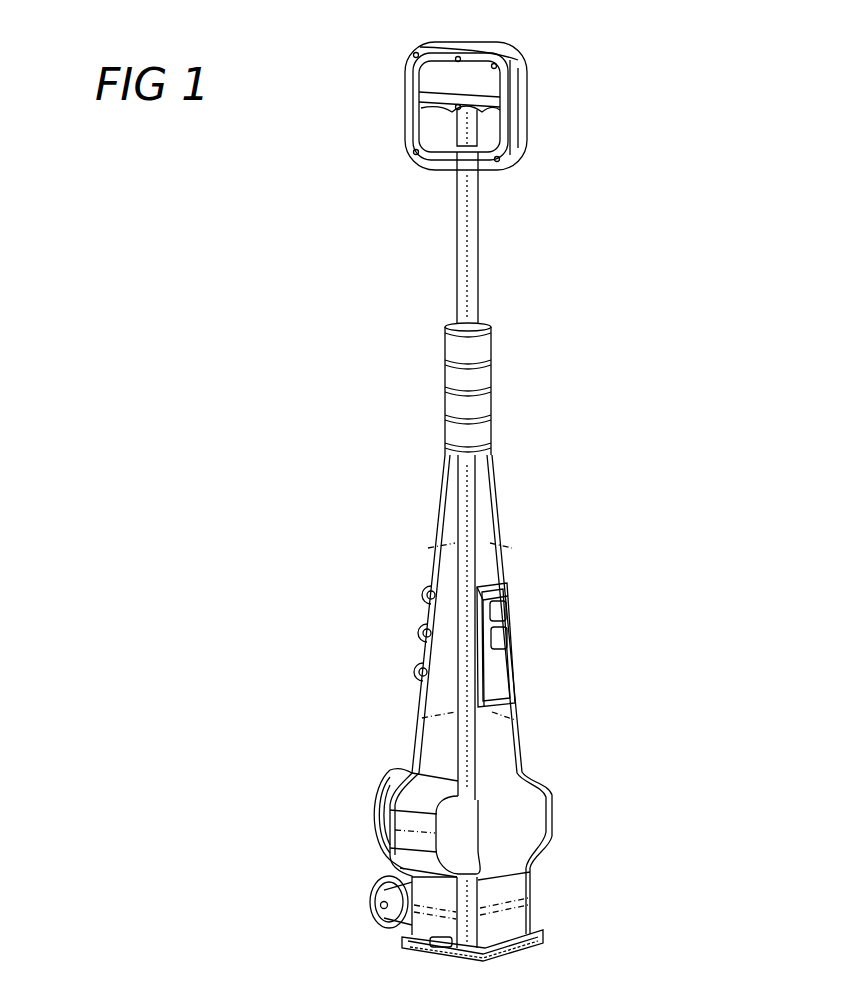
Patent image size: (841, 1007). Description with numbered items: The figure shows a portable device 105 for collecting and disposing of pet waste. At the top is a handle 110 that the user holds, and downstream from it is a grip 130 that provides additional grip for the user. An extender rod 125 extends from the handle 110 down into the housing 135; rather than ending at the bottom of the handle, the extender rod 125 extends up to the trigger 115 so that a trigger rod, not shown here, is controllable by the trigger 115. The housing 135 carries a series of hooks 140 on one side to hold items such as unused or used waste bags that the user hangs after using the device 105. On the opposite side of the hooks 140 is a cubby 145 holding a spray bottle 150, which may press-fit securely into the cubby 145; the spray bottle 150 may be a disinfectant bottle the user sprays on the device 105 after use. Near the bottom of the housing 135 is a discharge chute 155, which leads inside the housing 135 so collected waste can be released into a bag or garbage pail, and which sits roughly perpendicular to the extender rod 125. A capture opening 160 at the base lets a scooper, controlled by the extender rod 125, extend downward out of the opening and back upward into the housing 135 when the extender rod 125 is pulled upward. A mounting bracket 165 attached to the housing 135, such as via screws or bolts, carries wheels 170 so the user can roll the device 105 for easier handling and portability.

The portable device 105 is at (695, 165).
The handle 110 is at (528, 98).
The trigger 115 is at (456, 108).
The extender rod 125 is at (480, 240).
The grip 130 is at (493, 388).
The housing 135 is at (500, 496).
The hooks 140 is at (419, 634).
The cubby 145 is at (515, 639).
The spray bottle 150 is at (516, 669).
The discharge chute 155 is at (352, 793).
The capture opening 160 is at (546, 937).
The mounting bracket 165 is at (380, 905).
The wheels 170 is at (372, 888).